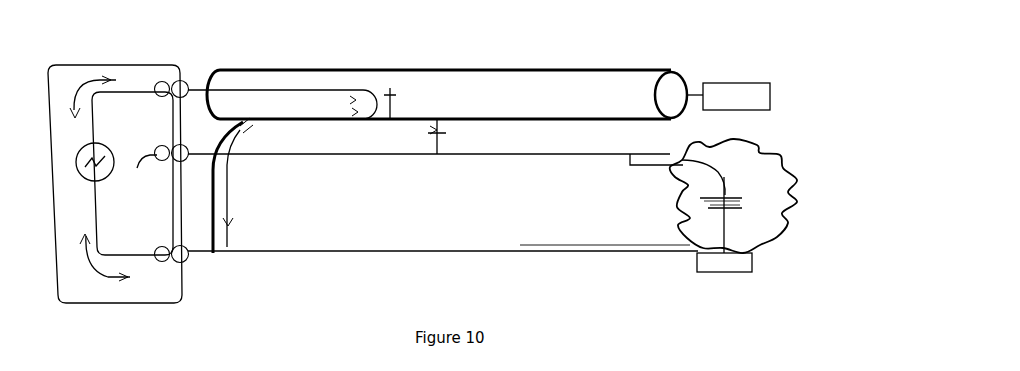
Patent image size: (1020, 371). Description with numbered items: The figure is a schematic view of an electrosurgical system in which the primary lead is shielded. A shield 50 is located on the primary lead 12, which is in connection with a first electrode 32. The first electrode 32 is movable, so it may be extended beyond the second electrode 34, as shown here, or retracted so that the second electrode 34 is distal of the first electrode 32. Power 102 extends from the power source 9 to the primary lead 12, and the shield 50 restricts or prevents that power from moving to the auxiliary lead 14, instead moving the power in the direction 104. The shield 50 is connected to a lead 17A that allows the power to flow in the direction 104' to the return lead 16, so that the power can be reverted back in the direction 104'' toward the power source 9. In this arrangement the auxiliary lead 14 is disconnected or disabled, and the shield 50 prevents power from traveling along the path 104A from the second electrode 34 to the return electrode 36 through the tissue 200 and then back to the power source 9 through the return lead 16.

The power source 9 is at (74, 155).
The power 102 is at (76, 88).
The direction 104'' is at (90, 292).
The shield 50 is at (582, 68).
The primary lead 12 is at (260, 88).
The direction 104 is at (392, 91).
The first electrode 32 is at (752, 100).
The auxiliary lead 14 is at (350, 156).
The second electrode 34 is at (628, 165).
The return lead 16 is at (341, 252).
The lead 17A is at (220, 230).
The direction 104' is at (265, 218).
The tissue 200 is at (792, 195).
The path 104A is at (724, 180).
The return electrode 36 is at (723, 269).